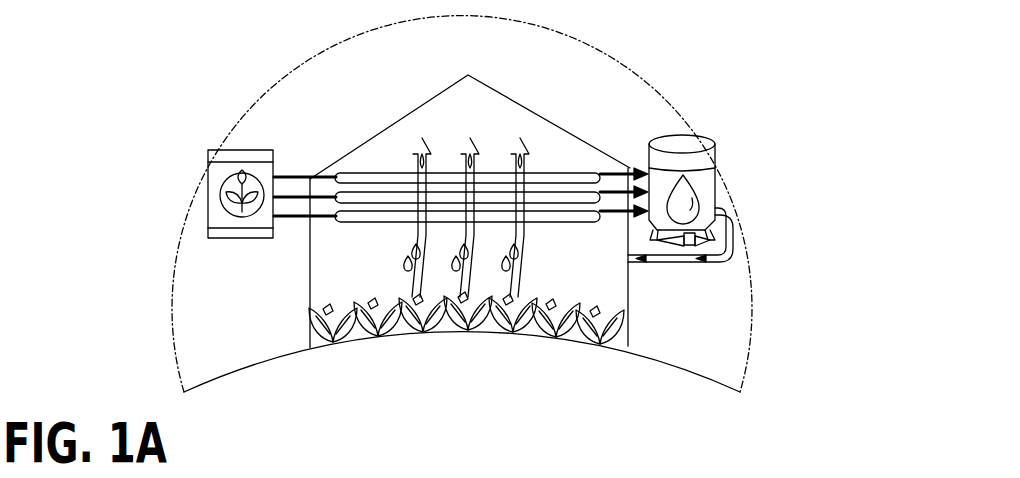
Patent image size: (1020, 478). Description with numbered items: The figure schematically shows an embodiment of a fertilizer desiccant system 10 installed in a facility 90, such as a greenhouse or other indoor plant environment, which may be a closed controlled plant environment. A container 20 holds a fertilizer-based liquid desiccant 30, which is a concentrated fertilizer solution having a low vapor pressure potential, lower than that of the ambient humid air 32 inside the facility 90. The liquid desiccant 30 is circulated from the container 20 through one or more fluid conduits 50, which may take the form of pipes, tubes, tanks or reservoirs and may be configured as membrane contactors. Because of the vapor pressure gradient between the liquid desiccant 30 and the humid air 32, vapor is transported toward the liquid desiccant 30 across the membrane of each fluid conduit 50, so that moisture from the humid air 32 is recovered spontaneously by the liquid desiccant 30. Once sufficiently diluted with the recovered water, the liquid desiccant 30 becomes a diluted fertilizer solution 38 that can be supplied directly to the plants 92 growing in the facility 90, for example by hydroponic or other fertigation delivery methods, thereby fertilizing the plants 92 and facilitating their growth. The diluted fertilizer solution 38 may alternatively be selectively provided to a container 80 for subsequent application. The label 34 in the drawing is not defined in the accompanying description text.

The fertilizer desiccant system 10 is at (718, 105).
The container 20 is at (208, 164).
The fertilizer-based liquid desiccant 30 is at (210, 180).
The humid air 32 is at (563, 250).
The enclosure roof 34 is at (538, 155).
The diluted fertilizer solution 38 is at (640, 153).
The fluid conduit 50 is at (373, 170).
The container 80 is at (716, 150).
The facility 90 is at (520, 107).
The plants 92 is at (333, 298).